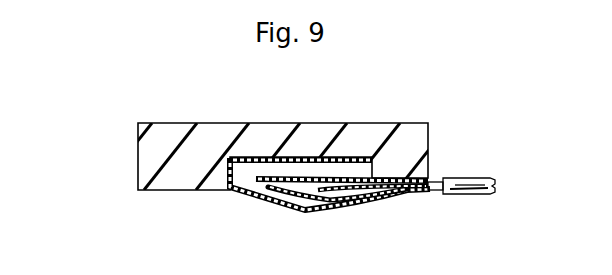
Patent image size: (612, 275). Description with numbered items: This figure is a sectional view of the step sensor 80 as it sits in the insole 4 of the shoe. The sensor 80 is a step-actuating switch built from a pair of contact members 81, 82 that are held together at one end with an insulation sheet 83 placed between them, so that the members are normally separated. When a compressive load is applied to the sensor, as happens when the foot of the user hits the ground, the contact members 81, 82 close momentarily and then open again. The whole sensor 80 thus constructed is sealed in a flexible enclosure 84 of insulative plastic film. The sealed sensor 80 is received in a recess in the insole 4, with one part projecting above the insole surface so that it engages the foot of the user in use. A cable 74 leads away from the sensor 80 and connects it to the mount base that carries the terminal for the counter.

The insole 4 is at (187, 143).
The cable 74 is at (473, 180).
The step sensor 80 is at (253, 198).
The contact member 81 is at (315, 178).
The contact member 82 is at (323, 200).
The insulation sheet 83 is at (353, 160).
The flexible enclosure 84 is at (297, 212).